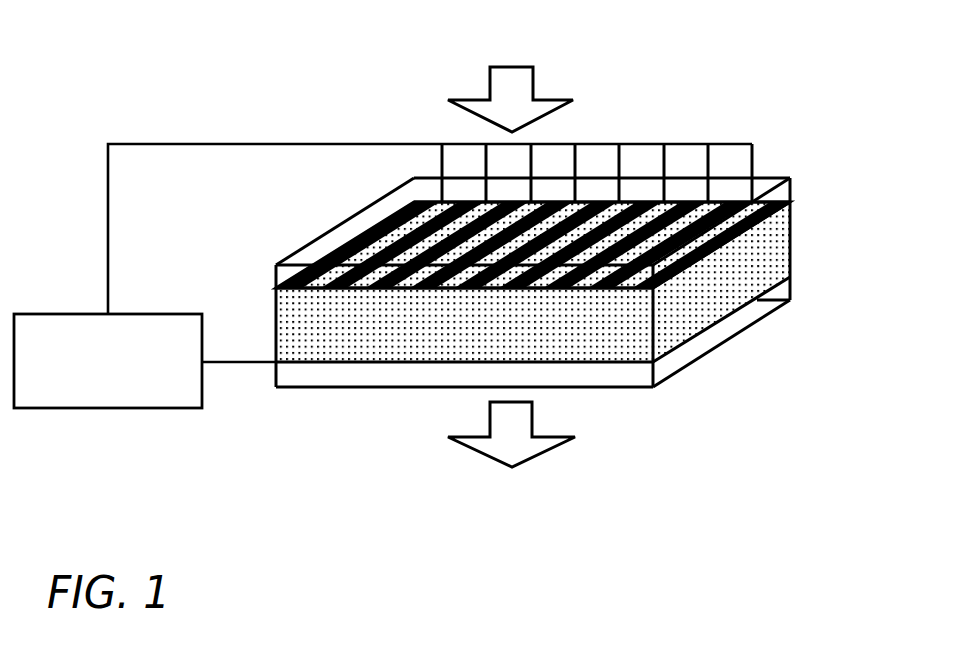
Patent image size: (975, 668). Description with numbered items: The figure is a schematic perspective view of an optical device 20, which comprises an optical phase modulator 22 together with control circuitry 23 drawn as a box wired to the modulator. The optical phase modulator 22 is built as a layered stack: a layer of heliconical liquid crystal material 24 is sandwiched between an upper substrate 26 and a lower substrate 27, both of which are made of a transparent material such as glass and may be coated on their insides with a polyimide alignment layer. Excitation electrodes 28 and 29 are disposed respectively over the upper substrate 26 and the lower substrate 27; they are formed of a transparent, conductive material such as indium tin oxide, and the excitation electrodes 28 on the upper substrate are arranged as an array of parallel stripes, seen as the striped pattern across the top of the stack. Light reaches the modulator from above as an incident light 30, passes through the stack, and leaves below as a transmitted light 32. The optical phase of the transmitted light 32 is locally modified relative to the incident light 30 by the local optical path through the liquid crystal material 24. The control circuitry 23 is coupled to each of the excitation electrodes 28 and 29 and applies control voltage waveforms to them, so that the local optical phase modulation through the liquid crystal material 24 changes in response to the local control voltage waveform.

The optical device 20 is at (196, 46).
The optical phase modulator 22 is at (828, 97).
The control circuitry 23 is at (105, 410).
The heliconical liquid crystal material 24 is at (792, 248).
The upper substrate 26 is at (792, 192).
The lower substrate 27 is at (792, 292).
The excitation electrodes 28 is at (316, 288).
The excitation electrode 29 is at (690, 363).
The incident light 30 is at (512, 66).
The transmitted light 32 is at (575, 437).